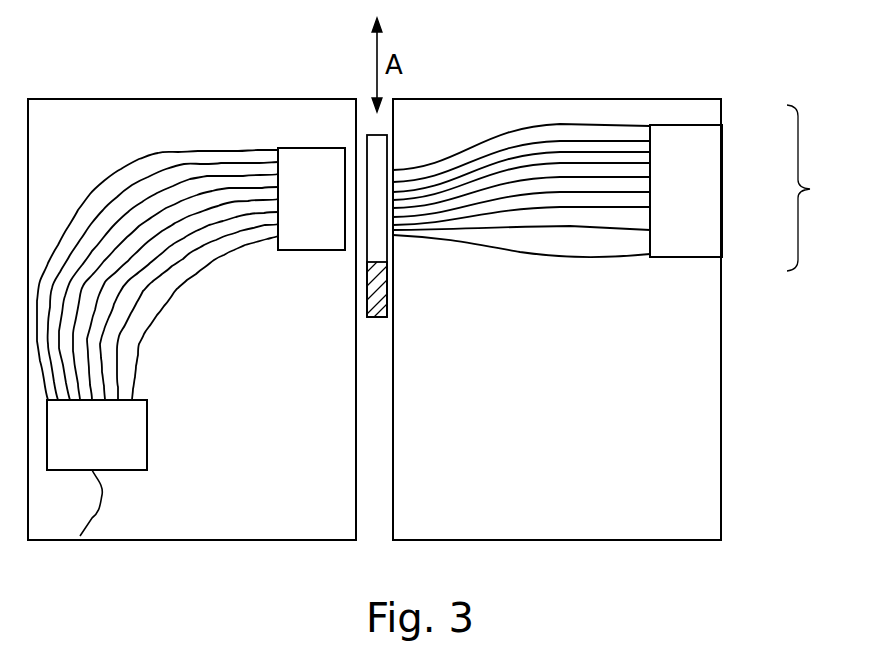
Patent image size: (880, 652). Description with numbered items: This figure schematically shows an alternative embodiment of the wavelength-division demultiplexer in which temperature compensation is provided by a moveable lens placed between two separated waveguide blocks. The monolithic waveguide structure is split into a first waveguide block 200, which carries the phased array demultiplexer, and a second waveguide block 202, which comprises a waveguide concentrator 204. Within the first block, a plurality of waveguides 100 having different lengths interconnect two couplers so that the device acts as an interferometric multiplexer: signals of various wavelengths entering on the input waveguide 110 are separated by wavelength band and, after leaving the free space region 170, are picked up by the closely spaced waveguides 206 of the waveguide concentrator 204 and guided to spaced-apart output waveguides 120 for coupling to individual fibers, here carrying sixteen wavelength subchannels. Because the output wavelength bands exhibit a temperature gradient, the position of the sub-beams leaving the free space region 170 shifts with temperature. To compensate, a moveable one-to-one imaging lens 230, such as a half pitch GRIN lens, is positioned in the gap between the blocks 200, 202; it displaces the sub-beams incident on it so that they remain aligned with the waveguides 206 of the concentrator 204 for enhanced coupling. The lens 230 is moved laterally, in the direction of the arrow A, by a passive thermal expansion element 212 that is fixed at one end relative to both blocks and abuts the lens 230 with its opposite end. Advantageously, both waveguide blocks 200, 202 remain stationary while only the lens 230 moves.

The waveguides 100 is at (152, 153).
The input waveguide 110 is at (106, 508).
The output waveguides 120 is at (809, 188).
The free space region 170 is at (196, 309).
The waveguide block 200 is at (192, 319).
The waveguide block 202 is at (557, 319).
The waveguide concentrator 204 is at (546, 265).
The waveguides 206 is at (478, 139).
The passive thermal expansion element 212 is at (383, 303).
The moveable 1:1 imaging lens 230 is at (380, 249).